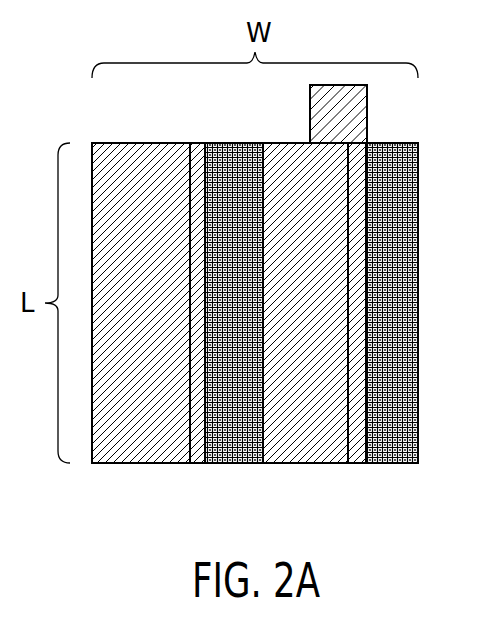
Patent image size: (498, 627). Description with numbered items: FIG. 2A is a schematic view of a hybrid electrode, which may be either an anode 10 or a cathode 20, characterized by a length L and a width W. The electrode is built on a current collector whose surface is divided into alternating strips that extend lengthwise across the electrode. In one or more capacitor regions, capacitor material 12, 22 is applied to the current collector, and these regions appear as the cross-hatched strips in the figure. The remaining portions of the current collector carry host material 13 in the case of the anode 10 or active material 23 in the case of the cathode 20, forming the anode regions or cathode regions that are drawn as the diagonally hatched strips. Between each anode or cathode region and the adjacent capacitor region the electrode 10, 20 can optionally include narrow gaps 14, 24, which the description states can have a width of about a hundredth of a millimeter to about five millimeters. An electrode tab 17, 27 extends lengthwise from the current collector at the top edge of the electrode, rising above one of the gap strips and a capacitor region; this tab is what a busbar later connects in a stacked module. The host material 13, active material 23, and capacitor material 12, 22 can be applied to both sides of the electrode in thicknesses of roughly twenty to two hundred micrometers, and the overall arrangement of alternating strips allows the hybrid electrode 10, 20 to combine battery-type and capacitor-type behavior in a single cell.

The anode 10 is at (221, 256).
The cathode 20 is at (90, 115).
The capacitor material 12 is at (332, 332).
The capacitor material 22 is at (230, 465).
The host material 13 is at (220, 332).
The active material 23 is at (148, 465).
The gap 14 is at (292, 301).
The gap 24 is at (200, 148).
The electrode tab 17 is at (373, 114).
The electrode tab 27 is at (351, 124).